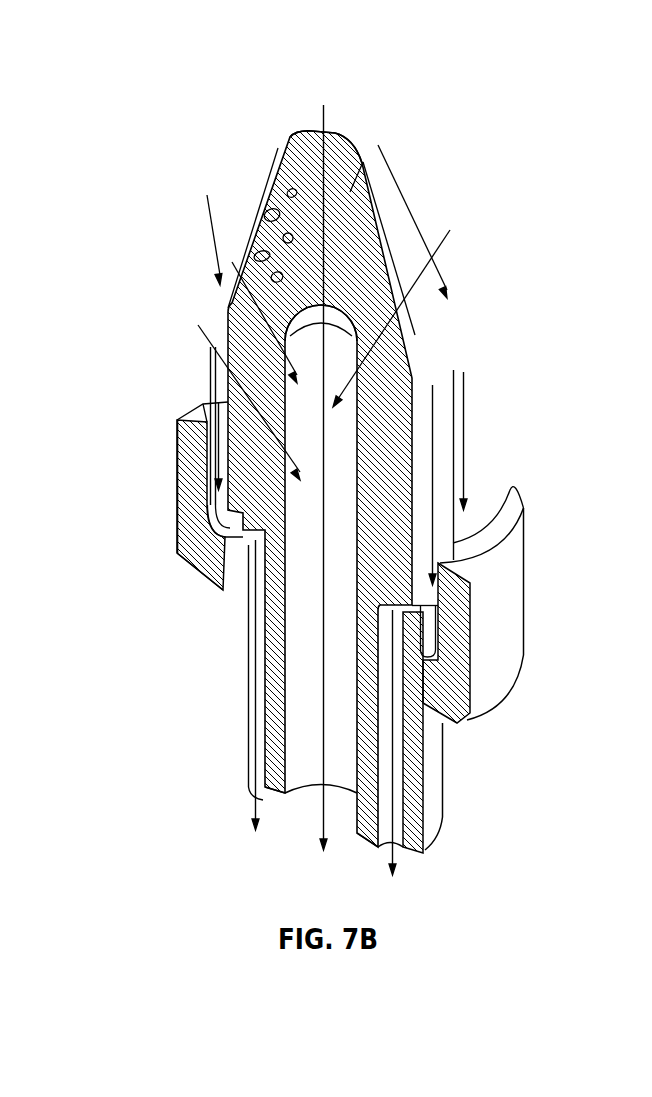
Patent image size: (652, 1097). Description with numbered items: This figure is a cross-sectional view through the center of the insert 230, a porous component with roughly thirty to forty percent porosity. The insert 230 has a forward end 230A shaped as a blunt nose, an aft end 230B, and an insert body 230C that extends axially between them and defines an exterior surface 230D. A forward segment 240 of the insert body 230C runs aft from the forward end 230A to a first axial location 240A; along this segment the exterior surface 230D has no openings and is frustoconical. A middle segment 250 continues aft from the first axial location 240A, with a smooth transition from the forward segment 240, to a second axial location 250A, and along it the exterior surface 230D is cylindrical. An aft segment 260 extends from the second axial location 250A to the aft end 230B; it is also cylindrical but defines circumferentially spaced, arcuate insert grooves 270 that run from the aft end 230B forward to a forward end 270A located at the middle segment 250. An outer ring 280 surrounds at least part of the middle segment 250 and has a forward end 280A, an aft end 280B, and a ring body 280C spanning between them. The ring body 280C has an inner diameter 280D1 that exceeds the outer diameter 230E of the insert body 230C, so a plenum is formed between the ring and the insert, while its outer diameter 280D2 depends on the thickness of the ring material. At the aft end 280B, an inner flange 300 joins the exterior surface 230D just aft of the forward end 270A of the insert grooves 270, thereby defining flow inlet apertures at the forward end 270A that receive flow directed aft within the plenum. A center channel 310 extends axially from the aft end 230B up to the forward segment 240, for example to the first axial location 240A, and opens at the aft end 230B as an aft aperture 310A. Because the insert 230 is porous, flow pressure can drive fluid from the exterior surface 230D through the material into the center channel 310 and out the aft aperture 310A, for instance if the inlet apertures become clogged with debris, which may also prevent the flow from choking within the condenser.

The insert 230 is at (208, 94).
The forward end 230A is at (337, 135).
The aft end 230B is at (440, 833).
The insert body 230C is at (480, 369).
The exterior surface 230D is at (232, 328).
The outer diameter of the insert body 230E is at (218, 402).
The forward segment 240 is at (290, 190).
The first axial location 240A is at (408, 372).
The middle segment 250 is at (442, 485).
The second axial location 250A is at (222, 575).
The aft segment 260 is at (423, 803).
The insert grooves 270 is at (234, 838).
The forward end of the insert grooves 270A is at (180, 558).
The outer ring 280 is at (492, 680).
The forward end of the outer ring 280A is at (520, 483).
The aft end of the outer ring 280B is at (488, 708).
The ring body 280C is at (523, 613).
The inner diameter of the ring body 280D1 is at (207, 455).
The outer diameter of the ring body 280D2 is at (177, 480).
The inner flange 300 is at (243, 592).
The center channel 310 is at (300, 767).
The aft aperture 310A is at (310, 787).